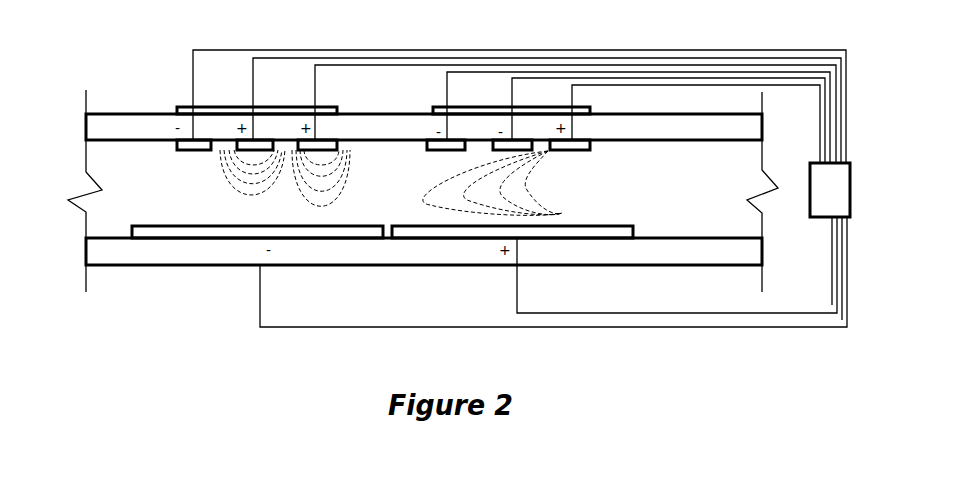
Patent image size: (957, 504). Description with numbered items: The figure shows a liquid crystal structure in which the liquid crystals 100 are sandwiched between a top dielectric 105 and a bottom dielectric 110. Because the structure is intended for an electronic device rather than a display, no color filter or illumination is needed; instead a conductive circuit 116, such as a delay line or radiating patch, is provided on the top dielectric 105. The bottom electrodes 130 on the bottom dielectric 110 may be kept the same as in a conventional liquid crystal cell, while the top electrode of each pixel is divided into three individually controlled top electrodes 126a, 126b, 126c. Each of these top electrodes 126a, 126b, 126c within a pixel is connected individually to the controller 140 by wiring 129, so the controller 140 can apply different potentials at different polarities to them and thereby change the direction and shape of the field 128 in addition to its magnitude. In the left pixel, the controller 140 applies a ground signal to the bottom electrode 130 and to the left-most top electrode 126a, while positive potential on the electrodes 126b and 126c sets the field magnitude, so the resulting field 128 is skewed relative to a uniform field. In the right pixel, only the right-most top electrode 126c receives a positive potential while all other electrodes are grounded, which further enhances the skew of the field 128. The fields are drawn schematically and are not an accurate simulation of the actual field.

The liquid crystals 100 is at (700, 200).
The top dielectric 105 is at (694, 113).
The bottom dielectric 110 is at (694, 238).
The conductive circuit 116 is at (336, 110).
The left-most top electrode 126a is at (188, 138).
The individually controlled top electrode 126b is at (250, 138).
The right-most top electrode 126c is at (305, 138).
The field 128 is at (188, 173).
The wiring 129 is at (274, 50).
The bottom electrode 130 is at (342, 225).
The controller 140 is at (851, 166).